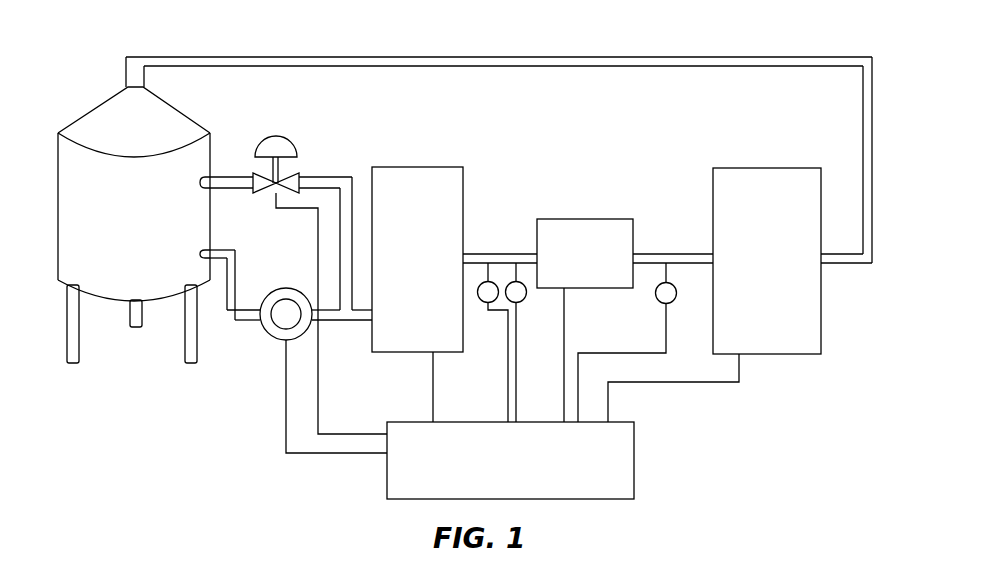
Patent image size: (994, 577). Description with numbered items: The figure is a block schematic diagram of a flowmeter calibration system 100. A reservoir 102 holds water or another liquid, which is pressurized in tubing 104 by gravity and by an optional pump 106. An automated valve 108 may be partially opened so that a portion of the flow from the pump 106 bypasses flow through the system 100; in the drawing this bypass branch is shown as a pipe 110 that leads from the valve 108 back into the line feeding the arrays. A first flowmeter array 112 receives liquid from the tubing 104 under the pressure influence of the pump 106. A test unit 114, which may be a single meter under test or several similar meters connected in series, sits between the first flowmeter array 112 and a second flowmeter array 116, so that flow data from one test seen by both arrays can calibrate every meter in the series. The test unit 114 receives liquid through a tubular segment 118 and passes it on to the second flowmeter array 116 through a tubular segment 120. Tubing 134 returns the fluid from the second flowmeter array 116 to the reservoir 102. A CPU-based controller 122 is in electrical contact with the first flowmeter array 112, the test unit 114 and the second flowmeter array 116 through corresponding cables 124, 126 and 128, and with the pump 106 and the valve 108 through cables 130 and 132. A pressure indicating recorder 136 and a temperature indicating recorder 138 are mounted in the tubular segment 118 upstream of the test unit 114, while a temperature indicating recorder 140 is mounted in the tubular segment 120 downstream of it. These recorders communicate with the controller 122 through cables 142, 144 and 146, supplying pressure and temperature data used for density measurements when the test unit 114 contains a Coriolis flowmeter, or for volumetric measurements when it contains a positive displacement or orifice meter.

The flowmeter calibration system 100 is at (716, 38).
The reservoir 102 is at (178, 126).
The tubing 104 is at (240, 320).
The pump 106 is at (299, 291).
The automated valve 108 is at (278, 144).
The bypass pipe 110 is at (343, 176).
The first flowmeter array 112 is at (455, 167).
The test unit 114 is at (600, 219).
The second flowmeter array 116 is at (804, 168).
The tubular segment 118 is at (510, 253).
The tubular segment 120 is at (688, 254).
The controller 122 is at (634, 475).
The cable 124 is at (434, 400).
The cable 126 is at (565, 303).
The cable 128 is at (716, 383).
The cable 130 is at (284, 411).
The cable 132 is at (318, 378).
The tubing 134 is at (874, 75).
The pressure indicating recorder 136 is at (483, 302).
The temperature indicating recorder 138 is at (527, 296).
The temperature indicating recorder 140 is at (677, 296).
The cable 142 is at (506, 367).
The cable 144 is at (518, 398).
The cable 146 is at (664, 338).